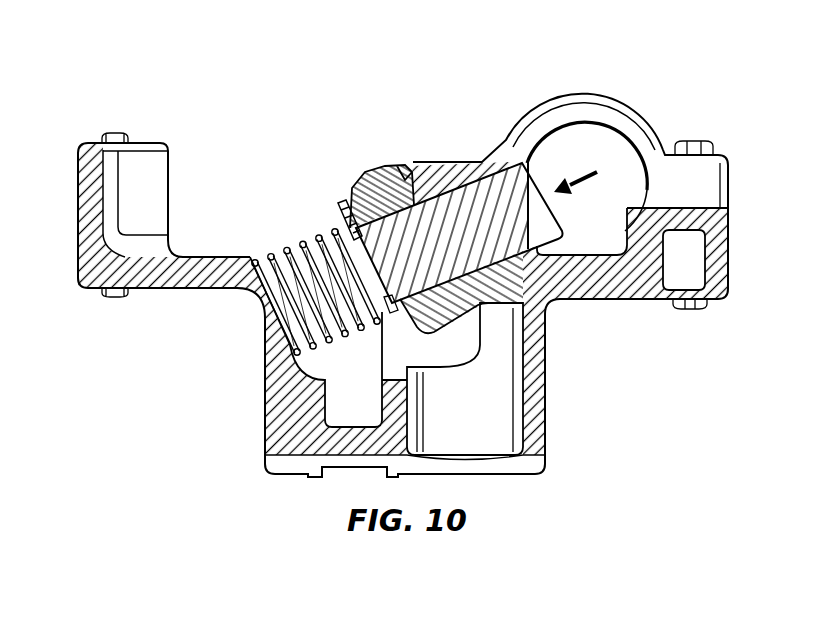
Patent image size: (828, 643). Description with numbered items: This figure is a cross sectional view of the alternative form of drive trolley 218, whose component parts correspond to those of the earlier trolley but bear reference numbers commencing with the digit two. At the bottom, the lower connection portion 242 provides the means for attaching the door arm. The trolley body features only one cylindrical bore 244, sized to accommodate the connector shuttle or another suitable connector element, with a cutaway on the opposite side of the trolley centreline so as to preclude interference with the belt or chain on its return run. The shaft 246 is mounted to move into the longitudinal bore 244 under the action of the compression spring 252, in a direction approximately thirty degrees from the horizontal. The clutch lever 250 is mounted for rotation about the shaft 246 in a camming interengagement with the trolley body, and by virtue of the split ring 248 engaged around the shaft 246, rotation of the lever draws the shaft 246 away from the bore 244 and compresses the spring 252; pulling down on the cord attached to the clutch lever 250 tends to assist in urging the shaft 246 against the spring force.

The drive trolley 218 is at (245, 117).
The lower connection portion 242 is at (283, 405).
The cylindrical bore 244 is at (588, 142).
The shaft 246 is at (458, 213).
The split ring 248 is at (340, 212).
The clutch lever 250 is at (370, 195).
The compression spring 252 is at (282, 253).